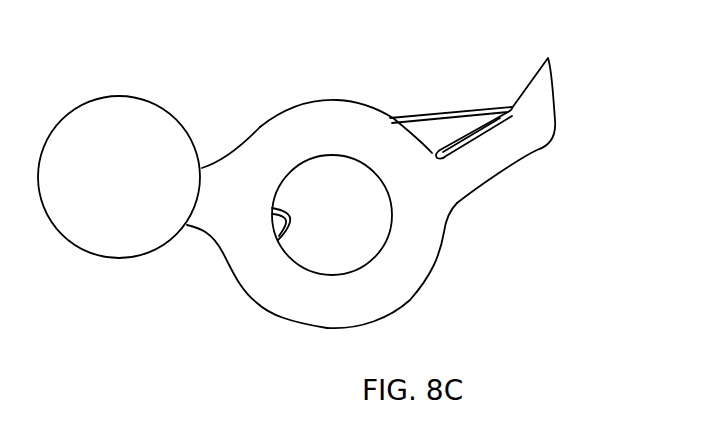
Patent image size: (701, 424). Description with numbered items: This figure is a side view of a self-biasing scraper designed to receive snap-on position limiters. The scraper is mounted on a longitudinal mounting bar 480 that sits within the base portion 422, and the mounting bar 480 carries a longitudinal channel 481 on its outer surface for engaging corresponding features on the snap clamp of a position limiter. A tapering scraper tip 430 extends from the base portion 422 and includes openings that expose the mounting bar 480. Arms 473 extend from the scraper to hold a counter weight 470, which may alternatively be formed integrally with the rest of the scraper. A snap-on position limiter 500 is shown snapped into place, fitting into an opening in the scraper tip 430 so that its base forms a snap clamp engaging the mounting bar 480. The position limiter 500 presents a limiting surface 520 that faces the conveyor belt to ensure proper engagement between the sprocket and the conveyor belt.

The counter weight 470 is at (108, 225).
The arms 473 is at (208, 207).
The longitudinal mounting bar 480 is at (325, 192).
The longitudinal channel 481 is at (280, 237).
The base portion 422 is at (407, 252).
The scraper tip 430 is at (513, 145).
The snap-on position limiter 500 is at (427, 137).
The limiting surface 520 is at (458, 112).